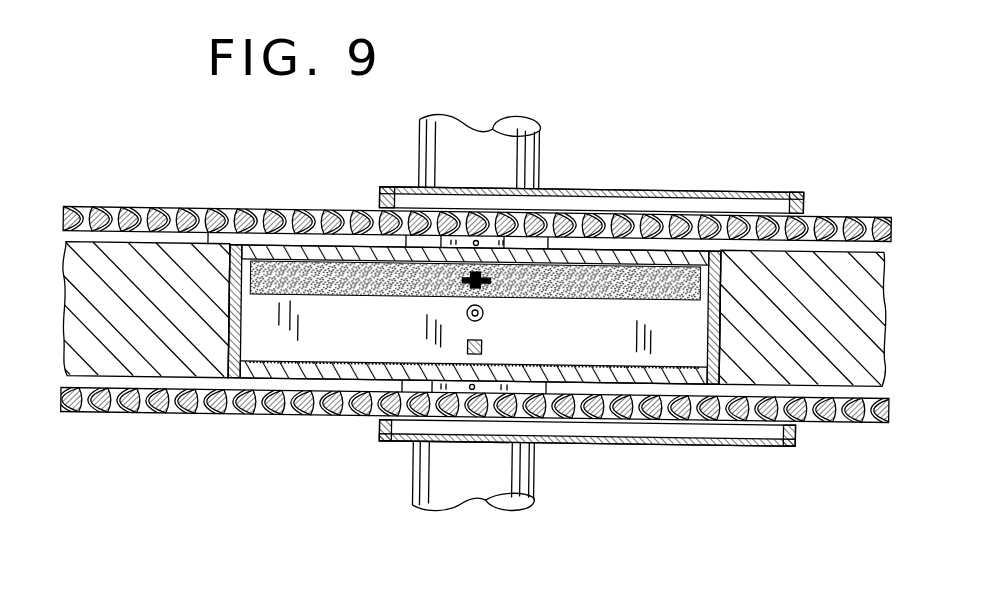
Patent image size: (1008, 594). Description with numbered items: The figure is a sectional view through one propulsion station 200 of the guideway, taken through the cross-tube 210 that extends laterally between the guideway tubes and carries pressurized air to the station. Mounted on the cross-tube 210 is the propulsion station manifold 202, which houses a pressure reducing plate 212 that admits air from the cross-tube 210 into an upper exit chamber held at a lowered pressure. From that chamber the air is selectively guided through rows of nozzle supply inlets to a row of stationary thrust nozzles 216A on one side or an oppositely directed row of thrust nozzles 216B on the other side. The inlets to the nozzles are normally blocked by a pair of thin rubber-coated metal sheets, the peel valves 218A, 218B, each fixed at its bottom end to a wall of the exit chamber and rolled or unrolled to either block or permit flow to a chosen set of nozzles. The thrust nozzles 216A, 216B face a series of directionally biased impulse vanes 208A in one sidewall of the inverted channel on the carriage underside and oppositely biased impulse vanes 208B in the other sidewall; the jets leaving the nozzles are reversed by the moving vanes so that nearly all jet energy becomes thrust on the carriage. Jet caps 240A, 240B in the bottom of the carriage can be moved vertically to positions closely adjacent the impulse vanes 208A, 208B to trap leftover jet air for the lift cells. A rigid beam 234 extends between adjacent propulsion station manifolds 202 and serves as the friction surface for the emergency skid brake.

The propulsion station 200 is at (660, 160).
The propulsion station manifold 202 is at (213, 248).
The impulse vanes 208A is at (293, 220).
The impulse vanes 208B is at (177, 402).
The cross-tube 210 is at (542, 188).
The pressure reducing plate 212 is at (386, 335).
The thrust nozzles 216A is at (310, 246).
The thrust nozzles 216B is at (365, 378).
The peel valve 218A is at (622, 298).
The peel valve 218B is at (594, 365).
The rigid beam 234 is at (168, 276).
The jet cap 240A is at (660, 190).
The jet cap 240B is at (657, 447).